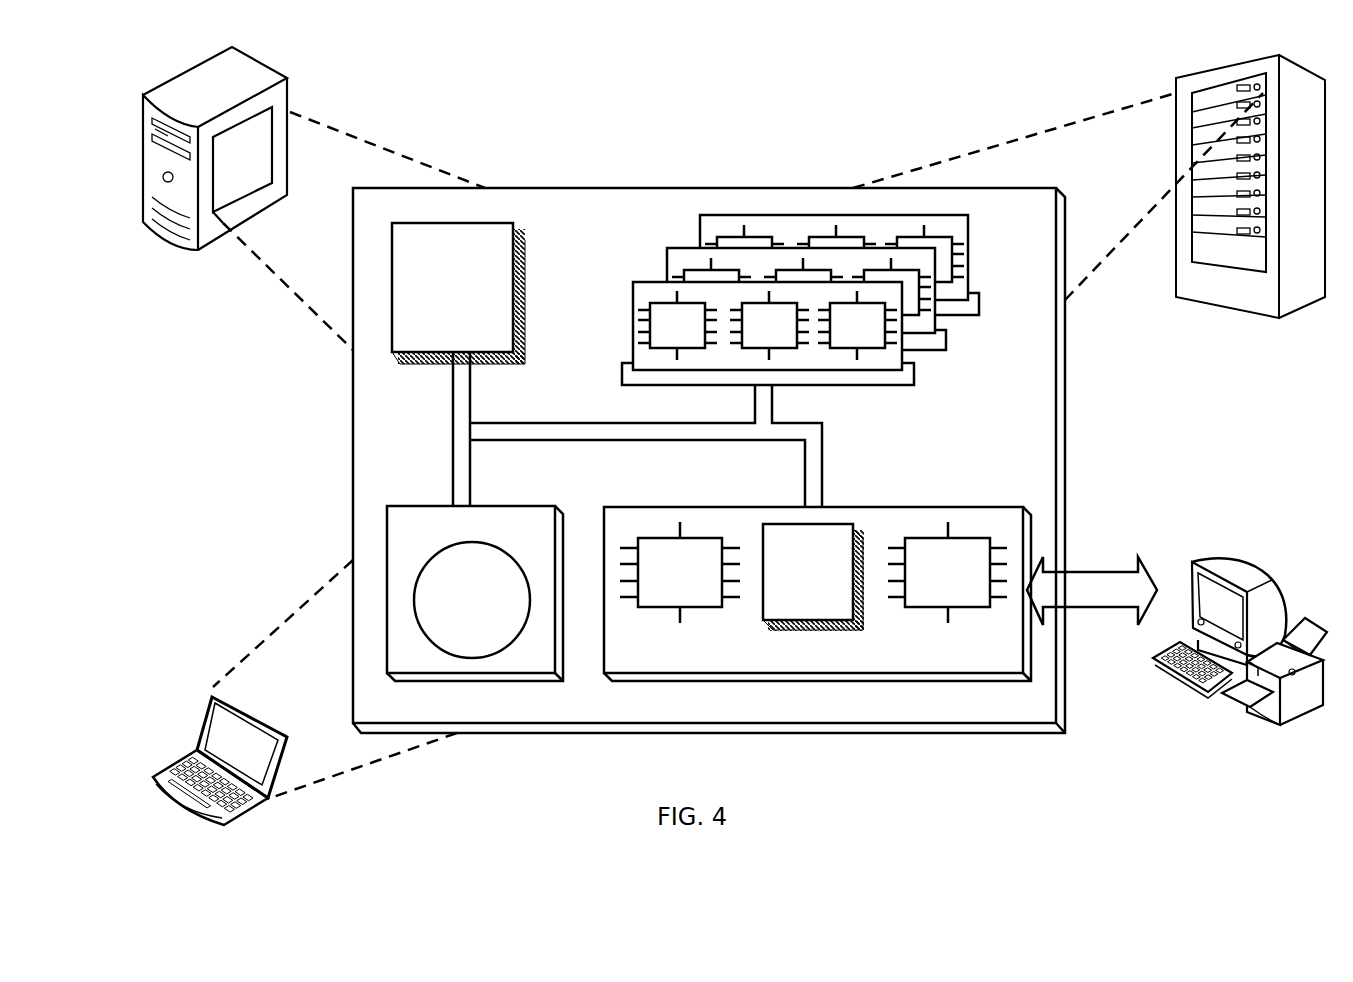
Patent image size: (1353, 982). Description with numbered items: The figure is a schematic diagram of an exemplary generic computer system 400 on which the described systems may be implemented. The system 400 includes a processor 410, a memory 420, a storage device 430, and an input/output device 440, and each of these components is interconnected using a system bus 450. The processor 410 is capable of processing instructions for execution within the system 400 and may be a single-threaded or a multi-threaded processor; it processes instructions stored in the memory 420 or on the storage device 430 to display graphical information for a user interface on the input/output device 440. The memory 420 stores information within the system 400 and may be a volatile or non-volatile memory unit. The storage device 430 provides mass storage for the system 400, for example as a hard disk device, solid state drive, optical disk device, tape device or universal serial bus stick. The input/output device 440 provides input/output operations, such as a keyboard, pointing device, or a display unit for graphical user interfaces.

The generic computer system 400 is at (707, 63).
The processor 410 is at (469, 343).
The memory 420 is at (975, 350).
The storage device 430 is at (511, 666).
The input/output device 440 is at (1193, 565).
The system bus 450 is at (634, 440).